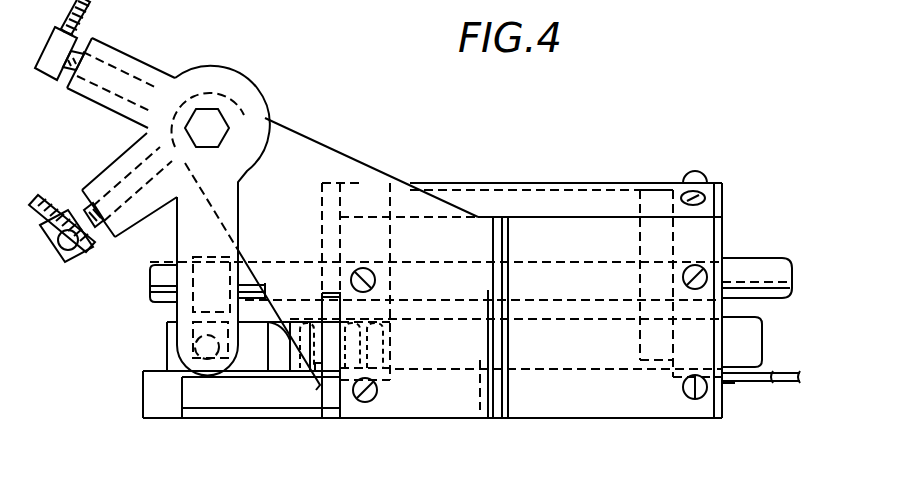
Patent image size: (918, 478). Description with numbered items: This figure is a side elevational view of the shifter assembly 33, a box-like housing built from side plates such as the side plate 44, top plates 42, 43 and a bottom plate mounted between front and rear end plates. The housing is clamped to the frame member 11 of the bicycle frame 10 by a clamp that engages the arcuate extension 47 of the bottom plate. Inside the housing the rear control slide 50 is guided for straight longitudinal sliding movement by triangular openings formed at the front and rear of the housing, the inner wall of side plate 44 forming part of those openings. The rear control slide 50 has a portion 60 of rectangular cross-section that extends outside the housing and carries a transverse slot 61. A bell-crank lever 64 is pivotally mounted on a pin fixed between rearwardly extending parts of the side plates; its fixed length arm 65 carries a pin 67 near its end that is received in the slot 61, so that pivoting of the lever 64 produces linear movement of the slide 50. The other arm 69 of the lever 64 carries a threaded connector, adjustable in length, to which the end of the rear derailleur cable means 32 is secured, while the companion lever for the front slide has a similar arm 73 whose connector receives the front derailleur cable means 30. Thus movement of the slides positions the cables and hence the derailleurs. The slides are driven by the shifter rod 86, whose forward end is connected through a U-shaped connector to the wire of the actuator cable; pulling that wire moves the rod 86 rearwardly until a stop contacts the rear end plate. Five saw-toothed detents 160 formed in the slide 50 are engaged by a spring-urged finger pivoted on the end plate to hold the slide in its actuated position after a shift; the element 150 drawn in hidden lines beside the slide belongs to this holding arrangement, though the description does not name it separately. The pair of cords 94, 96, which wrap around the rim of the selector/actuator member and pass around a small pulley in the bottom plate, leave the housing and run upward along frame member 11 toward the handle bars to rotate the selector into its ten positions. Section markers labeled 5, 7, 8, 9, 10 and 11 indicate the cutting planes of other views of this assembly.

The front derailleur cable means 30 is at (83, 16).
The rear derailleur cable means 32 is at (50, 200).
The shifter assembly 33 is at (735, 191).
The top plate 42 is at (482, 182).
The top plate 43 is at (617, 210).
The side plate 44 is at (295, 200).
The arcuate extension 47 is at (193, 402).
The rear control slide 50 is at (740, 342).
The portion 60 is at (172, 338).
The transverse slot 61 is at (187, 307).
The bell-crank lever 64 is at (245, 88).
The fixed length arm 65 is at (190, 230).
The pin 67 is at (197, 350).
The arm 69 is at (117, 172).
The arm 73 is at (122, 62).
The shifter rod 86 is at (762, 267).
The cord 94 is at (795, 380).
The cord 96 is at (735, 383).
The spring 150 is at (333, 312).
The saw-toothed detents 160 is at (290, 353).
The section line 5- 5 is at (92, 288).
The section line 7- 7 is at (208, 23).
The section line 8- 8 is at (320, 98).
The section line 9- 9 is at (545, 157).
The bicycle frame 10 is at (575, 117).
The frame member 11 is at (695, 115).